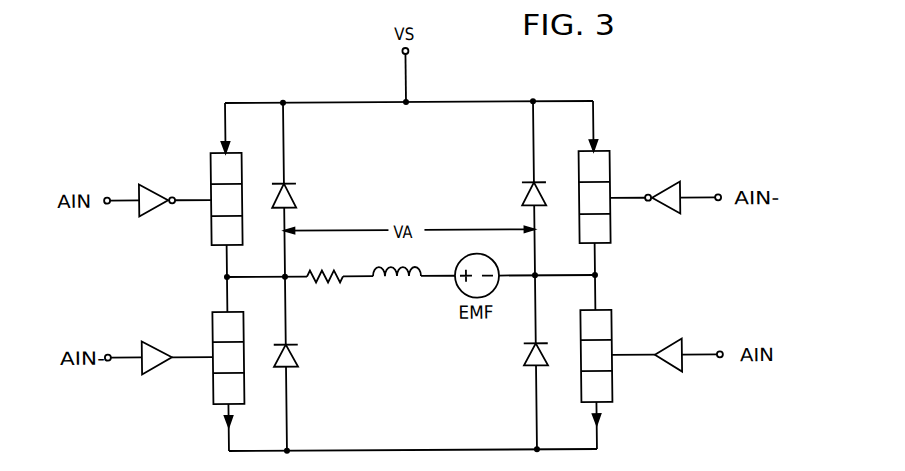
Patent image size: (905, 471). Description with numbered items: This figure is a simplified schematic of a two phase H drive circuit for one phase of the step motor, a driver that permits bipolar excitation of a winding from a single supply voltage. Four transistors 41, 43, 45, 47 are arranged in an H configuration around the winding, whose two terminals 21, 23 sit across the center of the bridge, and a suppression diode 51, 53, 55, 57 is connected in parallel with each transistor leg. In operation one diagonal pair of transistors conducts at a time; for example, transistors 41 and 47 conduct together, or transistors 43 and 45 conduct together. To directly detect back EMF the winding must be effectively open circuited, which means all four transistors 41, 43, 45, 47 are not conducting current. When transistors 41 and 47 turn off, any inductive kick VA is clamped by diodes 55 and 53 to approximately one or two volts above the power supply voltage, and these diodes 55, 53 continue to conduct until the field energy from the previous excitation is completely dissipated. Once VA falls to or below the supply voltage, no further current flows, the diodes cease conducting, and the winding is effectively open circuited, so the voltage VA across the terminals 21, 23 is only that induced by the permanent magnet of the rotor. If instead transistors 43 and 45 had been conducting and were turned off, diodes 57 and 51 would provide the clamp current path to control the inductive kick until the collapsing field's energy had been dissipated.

The winding terminal 21 is at (286, 276).
The winding terminal 23 is at (535, 276).
The transistor 41 is at (210, 233).
The transistor 43 is at (609, 163).
The transistor 45 is at (210, 391).
The transistor 47 is at (610, 328).
The diode 51 is at (295, 196).
The suppression diode 53 is at (521, 193).
The suppression diode 55 is at (295, 358).
The diode 57 is at (521, 357).